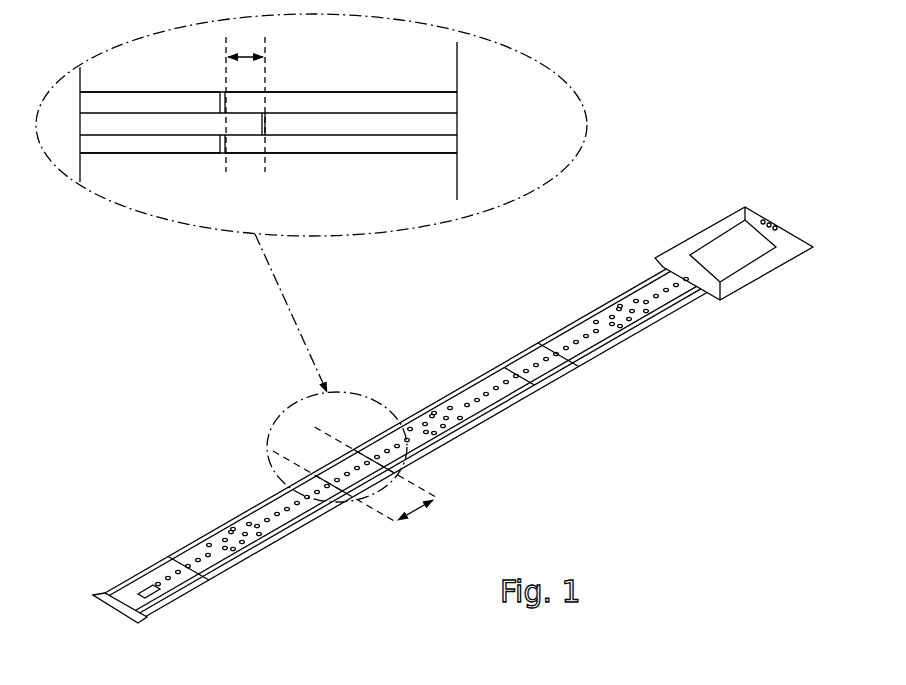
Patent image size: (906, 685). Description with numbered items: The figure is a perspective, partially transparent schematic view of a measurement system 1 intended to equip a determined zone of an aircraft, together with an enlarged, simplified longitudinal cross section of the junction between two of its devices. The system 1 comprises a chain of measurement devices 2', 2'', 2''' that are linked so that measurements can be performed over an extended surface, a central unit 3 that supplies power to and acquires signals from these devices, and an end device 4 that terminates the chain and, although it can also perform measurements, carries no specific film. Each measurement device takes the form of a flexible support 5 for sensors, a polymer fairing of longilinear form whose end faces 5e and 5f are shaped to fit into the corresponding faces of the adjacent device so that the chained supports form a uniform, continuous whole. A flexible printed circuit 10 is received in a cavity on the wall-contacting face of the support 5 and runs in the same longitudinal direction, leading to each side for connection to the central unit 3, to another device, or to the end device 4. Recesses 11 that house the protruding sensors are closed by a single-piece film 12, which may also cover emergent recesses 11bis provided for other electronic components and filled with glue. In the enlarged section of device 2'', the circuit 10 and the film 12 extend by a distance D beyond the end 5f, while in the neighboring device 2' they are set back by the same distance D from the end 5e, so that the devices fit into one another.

The measurement system 1 is at (153, 377).
The measurement device 2' is at (161, 295).
The measurement device 2'' is at (341, 261).
The measurement device 2''' is at (541, 308).
The central unit 3 is at (697, 232).
The end device 4 is at (203, 598).
The flexible support 5 is at (447, 440).
The end face of the support 5e is at (260, 122).
The end face of the support 5f is at (265, 135).
The flexible printed circuit 10 is at (347, 143).
The recess 11 is at (307, 497).
The recess 11bis is at (283, 537).
The film 12 is at (422, 100).
The offset distance D is at (332, 279).